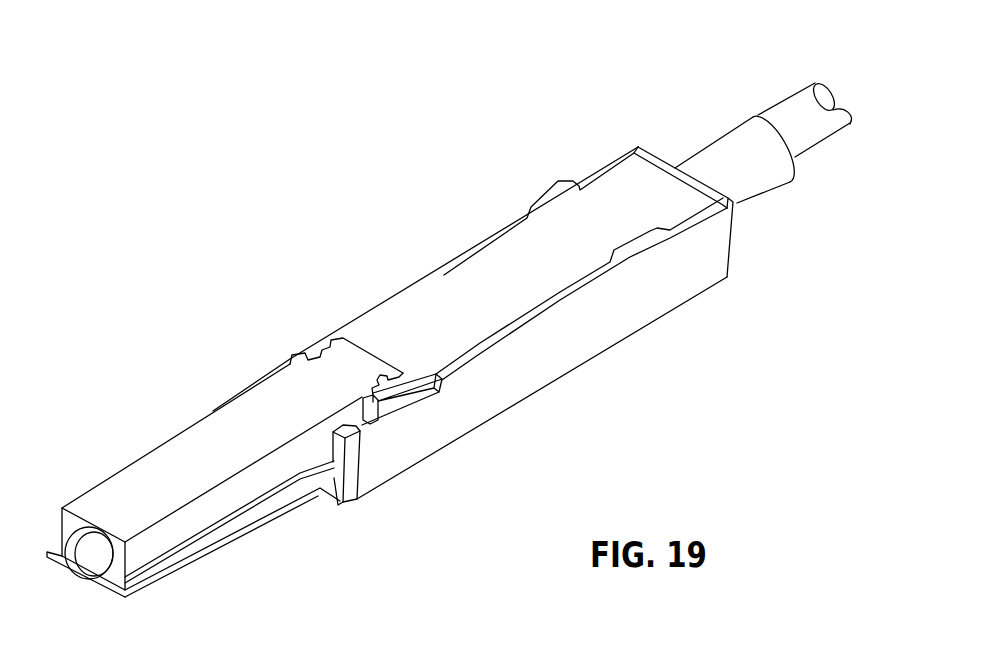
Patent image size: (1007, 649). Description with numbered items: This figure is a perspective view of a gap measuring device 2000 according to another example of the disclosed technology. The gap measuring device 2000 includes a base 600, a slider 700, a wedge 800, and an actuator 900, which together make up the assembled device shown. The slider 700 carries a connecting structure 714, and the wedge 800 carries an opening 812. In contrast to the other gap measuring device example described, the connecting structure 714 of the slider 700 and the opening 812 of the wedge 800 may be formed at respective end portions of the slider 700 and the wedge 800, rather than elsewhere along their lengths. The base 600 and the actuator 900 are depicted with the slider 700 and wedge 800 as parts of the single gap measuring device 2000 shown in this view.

The gap measuring device 2000 is at (375, 157).
The slider 700 is at (107, 477).
The wedge 800 is at (442, 282).
The opening 812 is at (308, 357).
The connecting structure 714 is at (356, 371).
The base 600 is at (533, 395).
The actuator 900 is at (732, 120).